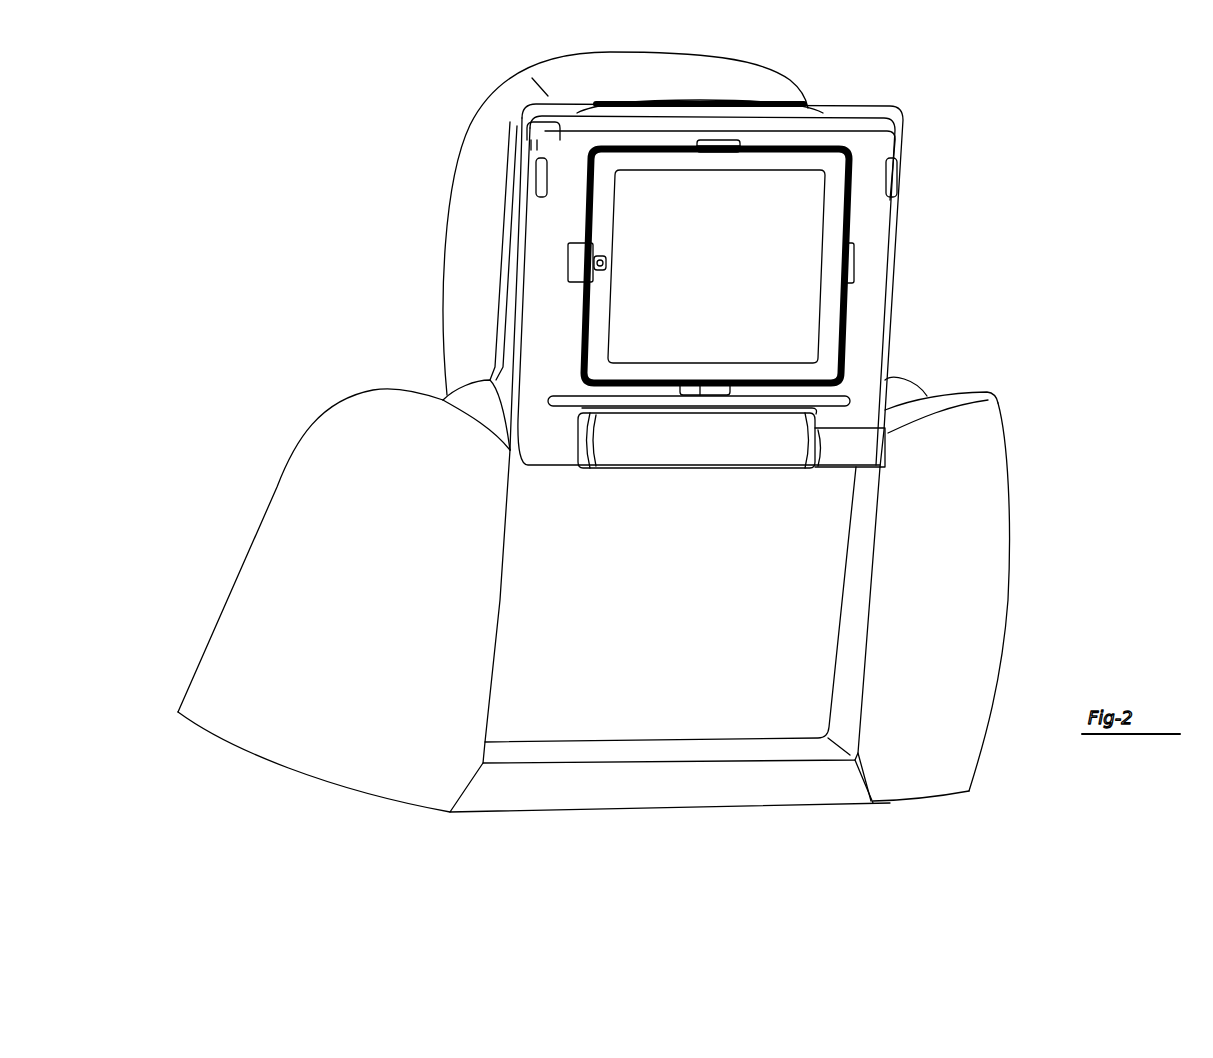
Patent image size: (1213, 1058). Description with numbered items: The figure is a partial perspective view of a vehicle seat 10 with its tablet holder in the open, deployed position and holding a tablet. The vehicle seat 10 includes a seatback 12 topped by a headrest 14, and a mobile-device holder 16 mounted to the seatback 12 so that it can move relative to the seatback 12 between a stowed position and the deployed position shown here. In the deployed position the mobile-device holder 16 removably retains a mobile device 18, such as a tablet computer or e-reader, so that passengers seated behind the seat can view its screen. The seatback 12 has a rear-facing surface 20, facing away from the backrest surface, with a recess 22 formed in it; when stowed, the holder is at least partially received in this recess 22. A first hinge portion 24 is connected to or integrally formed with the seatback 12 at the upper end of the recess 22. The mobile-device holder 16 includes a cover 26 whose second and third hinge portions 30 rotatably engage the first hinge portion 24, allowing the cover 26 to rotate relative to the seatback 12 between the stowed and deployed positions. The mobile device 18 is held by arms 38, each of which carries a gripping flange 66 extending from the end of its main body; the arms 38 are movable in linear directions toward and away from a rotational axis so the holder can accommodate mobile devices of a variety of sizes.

The vehicle seat 10 is at (1048, 182).
The seatback 12 is at (999, 678).
The headrest 14 is at (782, 76).
The mobile-device holder 16 is at (897, 290).
The mobile device 18 is at (837, 213).
The rear-facing surface 20 is at (770, 793).
The recess 22 is at (850, 693).
The first hinge portion 24 is at (675, 456).
The cover 26 is at (877, 144).
The second and third hinge portions 30 is at (548, 455).
The arms 38 is at (719, 155).
The gripping flange 66 is at (718, 140).